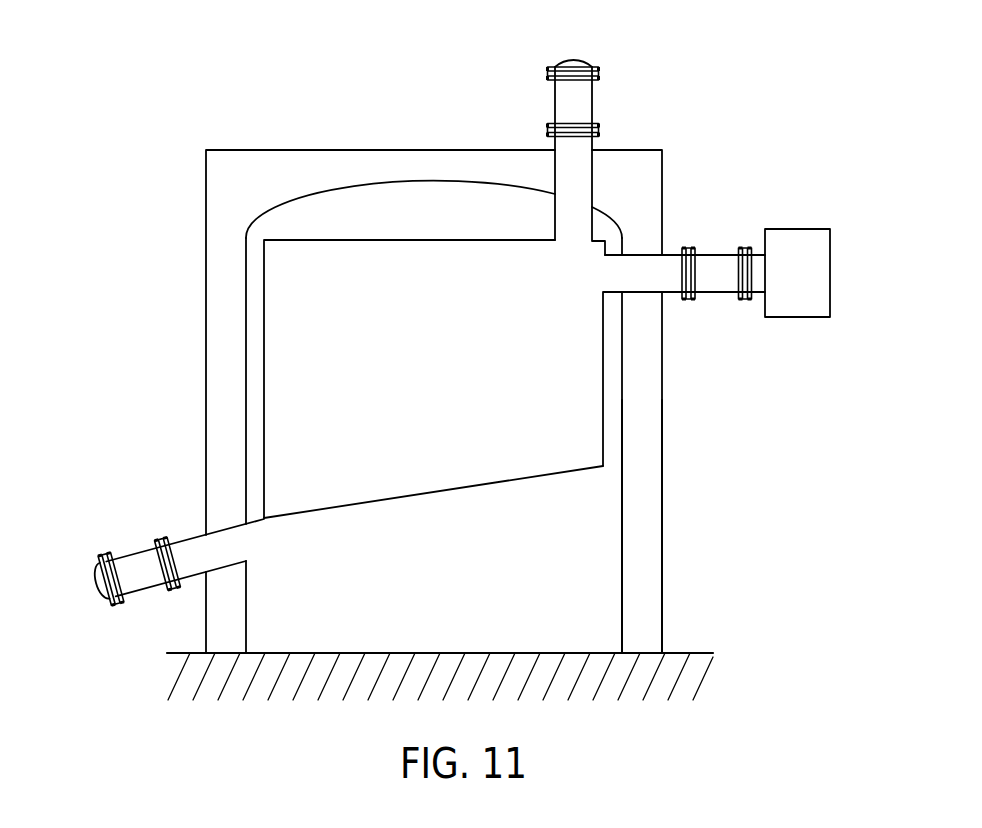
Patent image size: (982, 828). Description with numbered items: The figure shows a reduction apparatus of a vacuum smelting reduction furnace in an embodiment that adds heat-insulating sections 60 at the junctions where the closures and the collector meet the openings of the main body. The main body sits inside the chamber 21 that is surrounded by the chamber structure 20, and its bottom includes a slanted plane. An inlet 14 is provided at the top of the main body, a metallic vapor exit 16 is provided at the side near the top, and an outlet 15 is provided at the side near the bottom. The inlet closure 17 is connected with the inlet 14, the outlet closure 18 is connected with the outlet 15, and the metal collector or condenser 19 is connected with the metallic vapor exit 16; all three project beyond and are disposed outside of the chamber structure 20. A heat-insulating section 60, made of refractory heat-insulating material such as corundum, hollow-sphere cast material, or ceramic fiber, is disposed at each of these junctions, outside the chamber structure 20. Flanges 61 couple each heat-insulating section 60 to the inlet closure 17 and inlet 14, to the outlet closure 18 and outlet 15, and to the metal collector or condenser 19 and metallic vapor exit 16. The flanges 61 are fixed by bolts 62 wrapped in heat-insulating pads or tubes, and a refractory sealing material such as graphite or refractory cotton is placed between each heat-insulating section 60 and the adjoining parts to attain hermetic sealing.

The inlet 14 is at (592, 183).
The outlet 15 is at (217, 531).
The metallic vapor exit 16 is at (642, 293).
The inlet closure 17 is at (562, 58).
The outlet closure 18 is at (95, 577).
The metal collector or condenser 19 is at (815, 278).
The chamber structure 20 is at (225, 290).
The chamber 21 is at (598, 575).
The heat-insulating section 60 is at (592, 98).
The flanges 61 is at (548, 128).
The bolts 62 is at (752, 250).